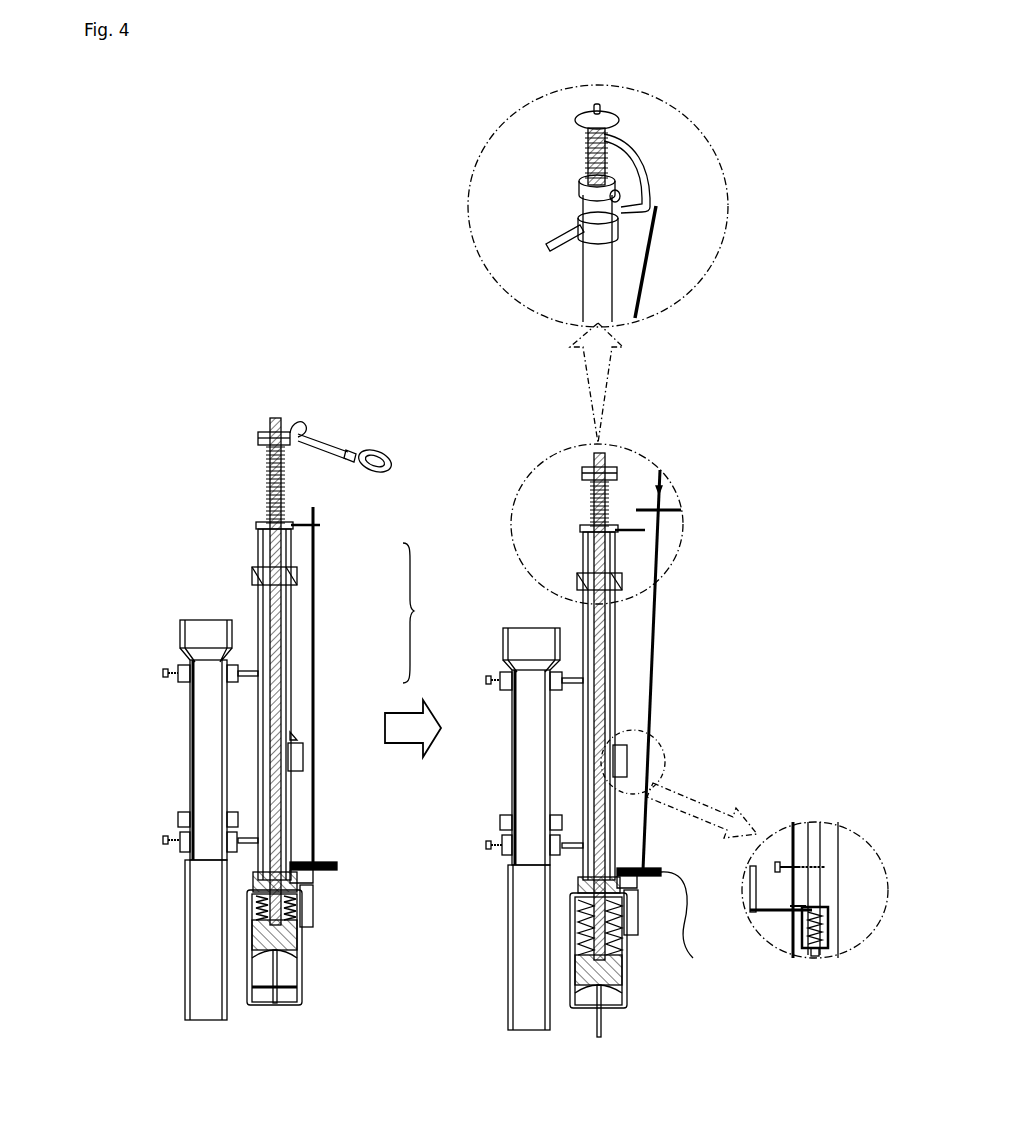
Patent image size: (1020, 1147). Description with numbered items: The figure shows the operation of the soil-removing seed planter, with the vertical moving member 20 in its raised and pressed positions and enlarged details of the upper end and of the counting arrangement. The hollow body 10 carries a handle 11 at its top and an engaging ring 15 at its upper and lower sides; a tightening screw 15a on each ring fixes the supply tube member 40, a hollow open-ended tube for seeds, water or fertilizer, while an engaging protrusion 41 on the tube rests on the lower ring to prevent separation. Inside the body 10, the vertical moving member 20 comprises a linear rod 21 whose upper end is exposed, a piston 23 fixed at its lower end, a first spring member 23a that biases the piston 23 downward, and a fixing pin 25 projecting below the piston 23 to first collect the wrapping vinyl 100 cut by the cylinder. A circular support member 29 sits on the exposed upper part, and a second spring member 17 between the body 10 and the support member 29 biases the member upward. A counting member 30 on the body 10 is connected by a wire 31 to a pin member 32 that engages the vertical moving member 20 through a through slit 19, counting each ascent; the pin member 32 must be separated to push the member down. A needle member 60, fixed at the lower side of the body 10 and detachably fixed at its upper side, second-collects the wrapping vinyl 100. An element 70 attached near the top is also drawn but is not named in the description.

The body 10 is at (258, 600).
The handle 11 is at (577, 235).
The engaging ring 15 is at (180, 680).
The tightening screw 15a is at (178, 672).
The second spring member 17 is at (267, 477).
The through slit 19 is at (797, 828).
The vertical moving member 20 is at (422, 613).
The rod 21 is at (278, 562).
The piston 23 is at (337, 866).
The first spring member 23a is at (300, 955).
The fixing pin 25 is at (282, 972).
The support member 29 is at (294, 432).
The counting member 30 is at (627, 758).
The wire 31 is at (773, 915).
The pin member 32 is at (757, 873).
The supply tube member 40 is at (190, 758).
The engaging protrusion 41 is at (178, 815).
The needle member 60 is at (653, 257).
The handle 70 is at (385, 448).
The wrapping vinyl 100 is at (692, 920).